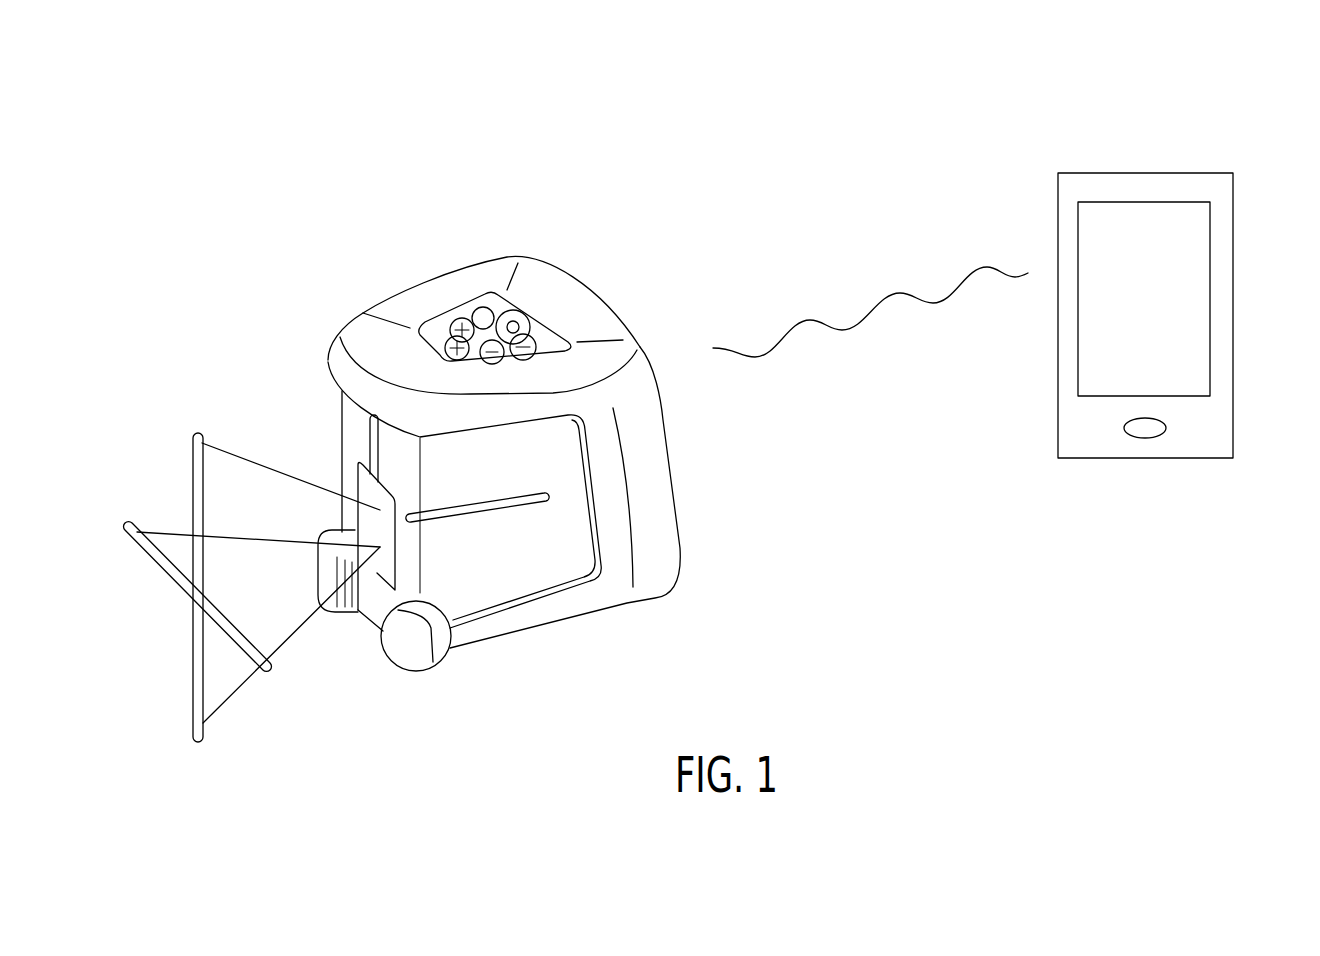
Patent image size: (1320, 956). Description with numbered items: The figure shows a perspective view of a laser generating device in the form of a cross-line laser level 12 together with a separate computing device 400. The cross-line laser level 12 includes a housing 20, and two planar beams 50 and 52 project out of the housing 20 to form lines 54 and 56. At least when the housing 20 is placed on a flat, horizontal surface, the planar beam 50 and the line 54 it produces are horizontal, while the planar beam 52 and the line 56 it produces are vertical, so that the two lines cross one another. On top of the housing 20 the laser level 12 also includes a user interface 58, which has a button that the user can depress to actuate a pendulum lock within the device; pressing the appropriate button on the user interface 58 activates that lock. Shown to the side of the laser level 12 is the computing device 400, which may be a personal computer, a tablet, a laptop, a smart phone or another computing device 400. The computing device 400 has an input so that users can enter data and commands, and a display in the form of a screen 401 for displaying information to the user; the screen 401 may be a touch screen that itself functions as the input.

The cross-line laser level 12 is at (338, 285).
The housing 20 is at (667, 460).
The planar beam 50 is at (157, 530).
The planar beam 52 is at (240, 452).
The line 54 is at (143, 553).
The line 56 is at (190, 694).
The user interface 58 is at (513, 302).
The computing device 400 is at (1129, 152).
The screen 401 is at (1188, 318).